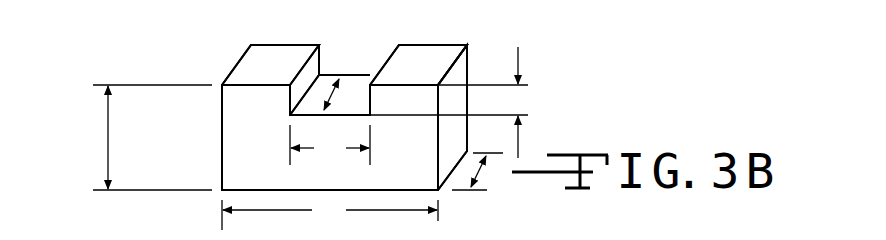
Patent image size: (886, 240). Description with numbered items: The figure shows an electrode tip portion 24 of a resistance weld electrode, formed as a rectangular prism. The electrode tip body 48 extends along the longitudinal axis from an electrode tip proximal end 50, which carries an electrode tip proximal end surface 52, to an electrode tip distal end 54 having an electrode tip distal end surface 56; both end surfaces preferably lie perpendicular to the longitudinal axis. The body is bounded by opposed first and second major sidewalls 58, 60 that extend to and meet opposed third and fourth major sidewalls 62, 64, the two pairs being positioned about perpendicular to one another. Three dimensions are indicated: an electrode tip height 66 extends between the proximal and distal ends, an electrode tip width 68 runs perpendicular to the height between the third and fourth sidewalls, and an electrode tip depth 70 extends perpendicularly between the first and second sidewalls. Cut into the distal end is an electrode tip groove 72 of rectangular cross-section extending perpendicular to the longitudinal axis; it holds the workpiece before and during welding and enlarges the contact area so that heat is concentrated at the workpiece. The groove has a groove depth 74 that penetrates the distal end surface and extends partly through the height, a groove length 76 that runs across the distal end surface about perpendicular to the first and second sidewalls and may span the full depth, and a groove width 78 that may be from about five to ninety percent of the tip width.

The electrode tip portion 24 is at (543, 58).
The electrode tip body 48 is at (458, 96).
The electrode tip proximal end 50 is at (420, 193).
The electrode tip proximal end surface 52 is at (214, 2).
The electrode tip distal end 54 is at (232, 118).
The electrode tip distal end surface 56 is at (420, 66).
The first major sidewall 58 is at (240, 161).
The second major sidewall 60 is at (285, 43).
The third major sidewall 62 is at (222, 157).
The fourth major sidewall 64 is at (466, 67).
The electrode tip height 66 is at (108, 132).
The electrode tip width 68 is at (330, 214).
The electrode tip depth 70 is at (478, 170).
The electrode tip groove 72 is at (380, 47).
The groove depth 74 is at (523, 97).
The groove length 76 is at (340, 84).
The groove width 78 is at (330, 145).